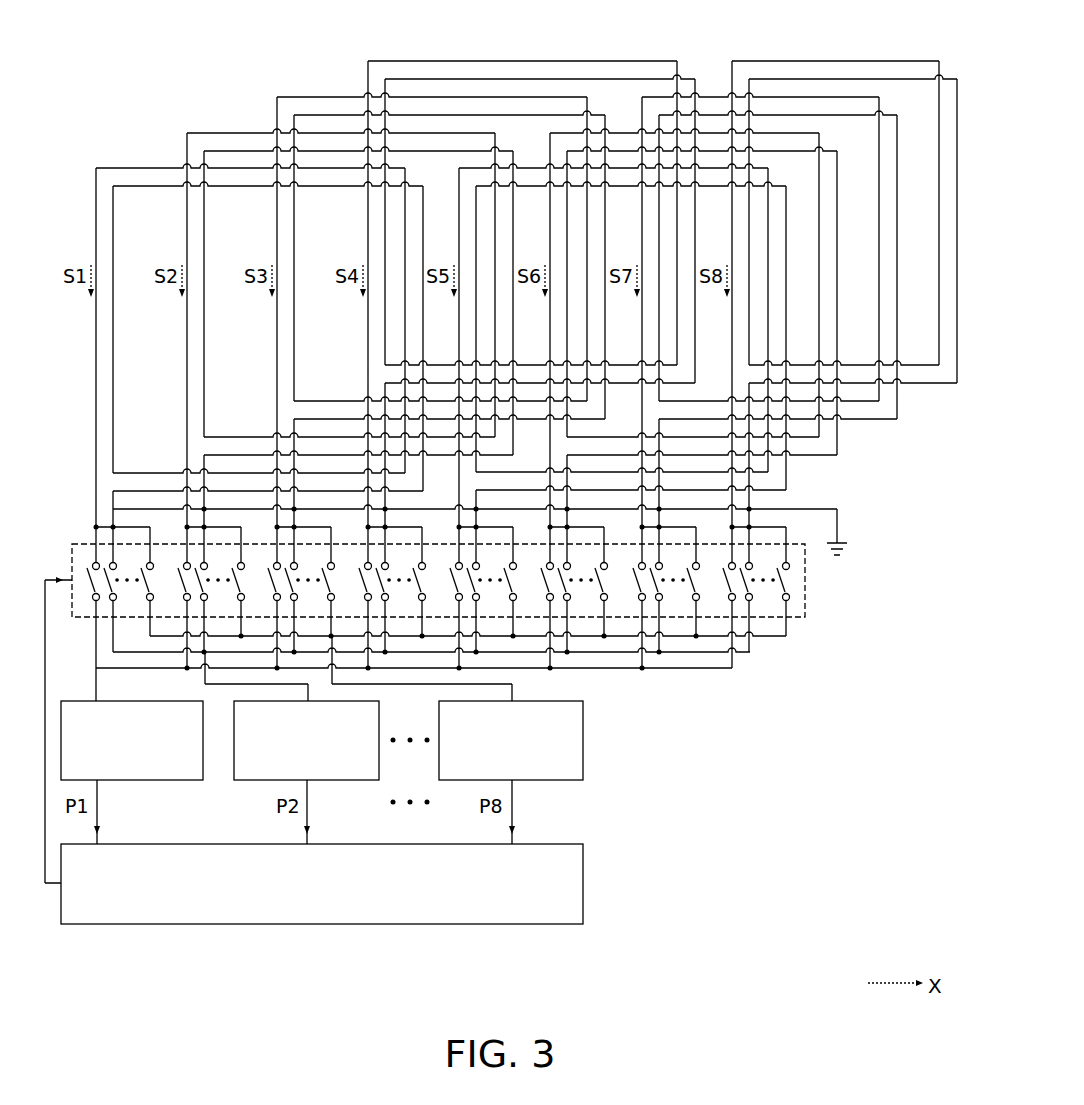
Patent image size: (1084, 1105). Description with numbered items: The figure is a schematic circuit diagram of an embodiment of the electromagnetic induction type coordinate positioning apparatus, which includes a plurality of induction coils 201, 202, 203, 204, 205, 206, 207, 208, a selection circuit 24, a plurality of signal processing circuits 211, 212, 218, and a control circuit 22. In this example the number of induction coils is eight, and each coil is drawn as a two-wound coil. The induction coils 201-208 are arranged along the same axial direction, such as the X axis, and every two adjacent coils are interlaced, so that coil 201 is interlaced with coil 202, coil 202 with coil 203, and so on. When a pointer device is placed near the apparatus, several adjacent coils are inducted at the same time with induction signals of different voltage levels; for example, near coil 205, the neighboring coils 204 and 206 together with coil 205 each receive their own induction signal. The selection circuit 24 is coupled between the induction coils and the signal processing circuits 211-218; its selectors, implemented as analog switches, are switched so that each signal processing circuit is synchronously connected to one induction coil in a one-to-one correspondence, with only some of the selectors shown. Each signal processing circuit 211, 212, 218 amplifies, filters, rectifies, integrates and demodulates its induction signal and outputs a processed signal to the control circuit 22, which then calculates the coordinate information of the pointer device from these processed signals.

The induction coil 201 is at (143, 167).
The induction coil 202 is at (229, 132).
The induction coil 203 is at (320, 96).
The induction coil 204 is at (413, 60).
The induction coil 205 is at (537, 166).
The induction coil 206 is at (625, 132).
The induction coil 207 is at (717, 96).
The induction coil 208 is at (840, 60).
The selection circuit 24 is at (805, 580).
The signal processing circuit 211 is at (148, 781).
The signal processing circuit 212 is at (342, 781).
The signal processing circuit 218 is at (547, 781).
The control circuit 22 is at (320, 925).